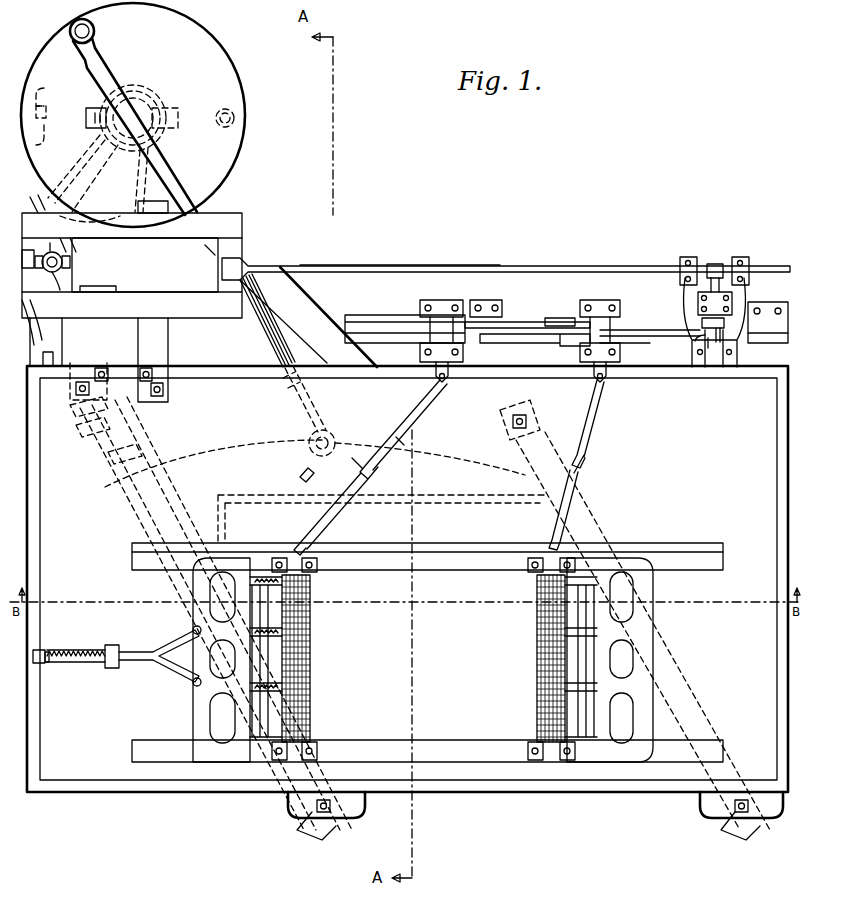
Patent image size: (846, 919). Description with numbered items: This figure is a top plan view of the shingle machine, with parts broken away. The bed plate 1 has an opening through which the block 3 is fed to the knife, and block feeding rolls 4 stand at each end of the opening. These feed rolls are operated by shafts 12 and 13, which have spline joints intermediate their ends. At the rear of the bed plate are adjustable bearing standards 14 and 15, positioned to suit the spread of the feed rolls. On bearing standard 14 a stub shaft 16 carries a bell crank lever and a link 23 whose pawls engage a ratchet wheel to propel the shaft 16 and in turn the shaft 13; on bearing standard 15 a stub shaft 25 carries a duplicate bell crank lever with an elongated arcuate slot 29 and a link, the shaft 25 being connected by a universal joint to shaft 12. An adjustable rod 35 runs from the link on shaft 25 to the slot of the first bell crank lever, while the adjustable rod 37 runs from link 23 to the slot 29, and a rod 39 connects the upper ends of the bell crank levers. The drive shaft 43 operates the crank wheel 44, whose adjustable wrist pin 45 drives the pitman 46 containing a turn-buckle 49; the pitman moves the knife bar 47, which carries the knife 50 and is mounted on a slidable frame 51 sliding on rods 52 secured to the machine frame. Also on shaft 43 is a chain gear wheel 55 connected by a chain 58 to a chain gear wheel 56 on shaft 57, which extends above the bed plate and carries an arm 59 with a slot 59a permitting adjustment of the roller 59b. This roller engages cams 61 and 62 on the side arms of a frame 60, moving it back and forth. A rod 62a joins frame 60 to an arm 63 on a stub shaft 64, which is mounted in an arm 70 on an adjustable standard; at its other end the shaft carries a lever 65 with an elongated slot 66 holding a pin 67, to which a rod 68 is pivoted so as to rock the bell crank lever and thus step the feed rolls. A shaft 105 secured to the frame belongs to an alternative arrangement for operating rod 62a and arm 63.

The bed plate 1 is at (112, 760).
The block 3 is at (427, 652).
The block feeding rolls 4 is at (312, 618).
The shaft 12 is at (376, 466).
The shaft 13 is at (712, 367).
The bearing standard 14 is at (592, 308).
The bearing standard 15 is at (430, 308).
The stub shaft 16 is at (606, 366).
The link 23 is at (197, 310).
The stub shaft 25 is at (452, 370).
The elongated arcuate slot 29 is at (612, 348).
The adjustable rod 35 is at (530, 344).
The adjustable rod 37 is at (560, 318).
The rod 39 is at (530, 322).
The shaft 43 is at (142, 107).
The crank wheel 44 is at (243, 101).
The wrist pin 45 is at (95, 30).
The pitman 46 is at (175, 188).
The knife bar 47 is at (248, 462).
The turn-buckle 49 is at (267, 335).
The knife 50 is at (458, 496).
The slidable frame 51 is at (115, 500).
The rods 52 is at (792, 315).
The chain gear wheel 55 is at (374, 320).
The chain gear wheel 56 is at (95, 178).
The shaft 57 is at (32, 327).
The chain 58 is at (89, 152).
The arm 59 is at (68, 262).
The slot 59a is at (66, 250).
The roller 59b is at (132, 192).
The frame 60 is at (237, 242).
The cam 61 is at (35, 207).
The cam 62 is at (96, 305).
The rod 62a is at (415, 265).
The arm 63 is at (714, 262).
The stub shaft 64 is at (700, 280).
The lever 65 is at (702, 322).
The elongated slot 66 is at (720, 332).
The pin 67 is at (700, 338).
The rod 68 is at (652, 340).
The arm 70 is at (708, 342).
The shaft 105 is at (570, 268).